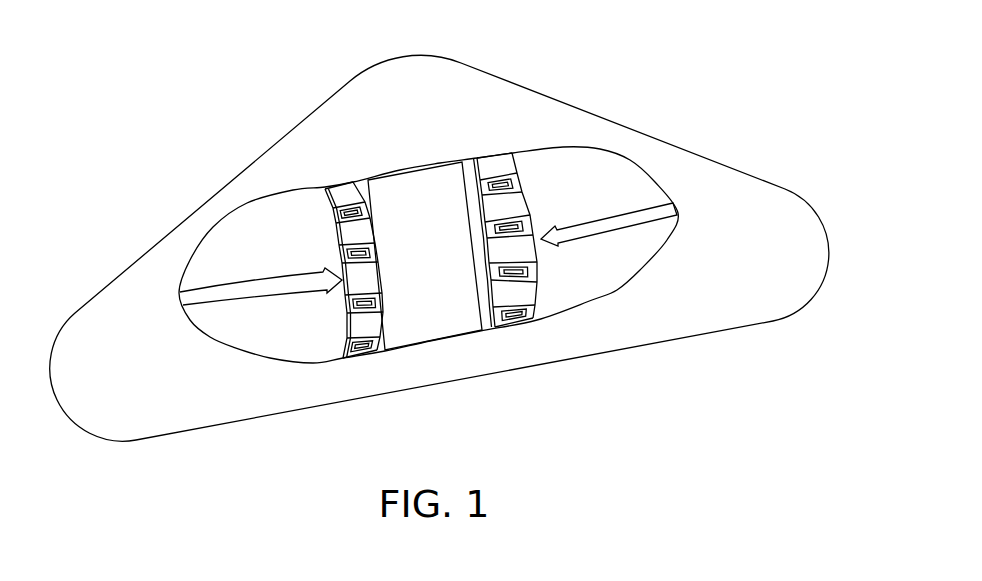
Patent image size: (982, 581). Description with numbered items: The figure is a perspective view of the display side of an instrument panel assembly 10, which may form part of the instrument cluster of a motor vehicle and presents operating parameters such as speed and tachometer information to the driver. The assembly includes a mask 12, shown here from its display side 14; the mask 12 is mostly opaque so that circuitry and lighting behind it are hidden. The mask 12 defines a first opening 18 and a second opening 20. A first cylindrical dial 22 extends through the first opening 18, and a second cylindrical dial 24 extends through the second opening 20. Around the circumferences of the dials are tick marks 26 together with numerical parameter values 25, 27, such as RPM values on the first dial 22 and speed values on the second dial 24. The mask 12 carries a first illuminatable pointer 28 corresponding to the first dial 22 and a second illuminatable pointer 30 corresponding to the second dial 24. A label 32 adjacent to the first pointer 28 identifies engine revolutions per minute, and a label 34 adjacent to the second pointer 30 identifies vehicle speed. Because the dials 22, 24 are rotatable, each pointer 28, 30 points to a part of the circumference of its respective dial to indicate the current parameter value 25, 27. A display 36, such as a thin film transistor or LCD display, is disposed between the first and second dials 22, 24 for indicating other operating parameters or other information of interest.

The instrument panel assembly 10 is at (148, 170).
The mask 12 is at (440, 57).
The display side 14 is at (600, 143).
The first opening 18 is at (488, 243).
The second opening 20 is at (333, 230).
The first cylindrical dial 22 is at (504, 157).
The second cylindrical dial 24 is at (330, 188).
The parameter values 25 is at (520, 204).
The tick marks 26 is at (526, 182).
The parameter values 27 is at (382, 283).
The first illuminatable pointer 28 is at (610, 228).
The second illuminatable pointer 30 is at (247, 292).
The label 32 is at (562, 287).
The label 34 is at (318, 338).
The display 36 is at (413, 181).